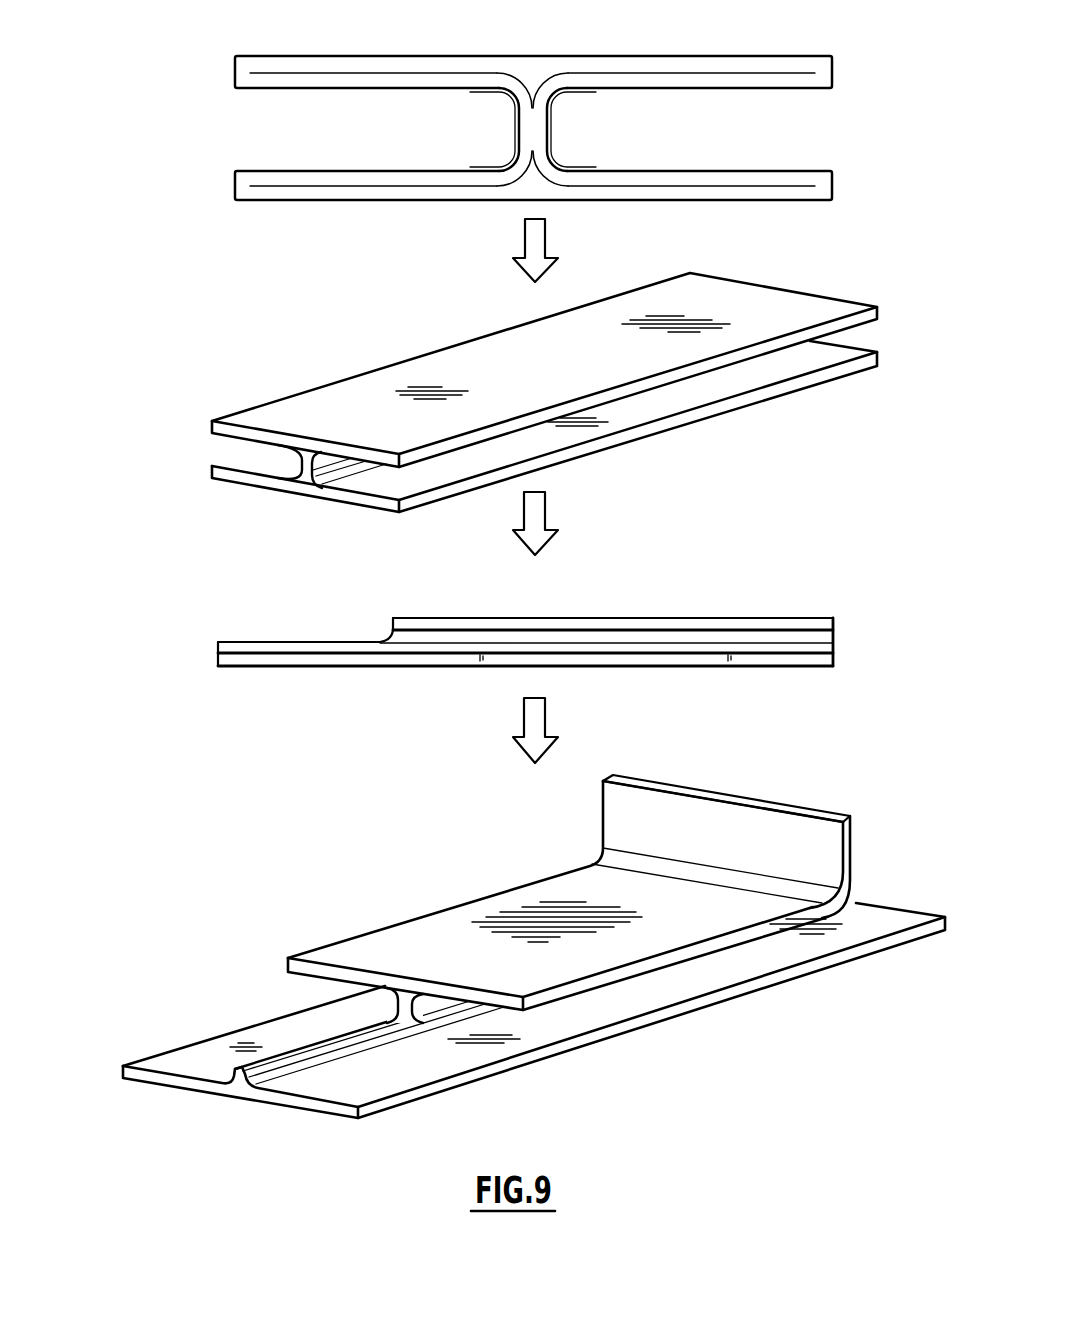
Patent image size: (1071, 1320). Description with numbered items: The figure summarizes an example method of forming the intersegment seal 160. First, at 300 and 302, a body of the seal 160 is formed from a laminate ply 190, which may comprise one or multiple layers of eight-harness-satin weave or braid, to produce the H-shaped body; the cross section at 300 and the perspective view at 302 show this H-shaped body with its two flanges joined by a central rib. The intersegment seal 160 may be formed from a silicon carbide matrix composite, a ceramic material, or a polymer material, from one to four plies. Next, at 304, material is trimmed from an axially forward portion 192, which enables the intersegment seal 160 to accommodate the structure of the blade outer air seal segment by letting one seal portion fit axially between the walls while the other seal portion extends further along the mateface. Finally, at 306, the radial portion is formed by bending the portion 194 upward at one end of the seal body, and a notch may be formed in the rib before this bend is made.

The forming step 300 is at (184, 139).
The laminate ply 190 is at (401, 64).
The forming step 302 is at (176, 414).
The trimming step 304 is at (183, 640).
The axially forward portion 192 is at (391, 636).
The bending step 306 is at (124, 1021).
The intersegment seal 160 is at (307, 912).
The bent portion 194 is at (852, 862).